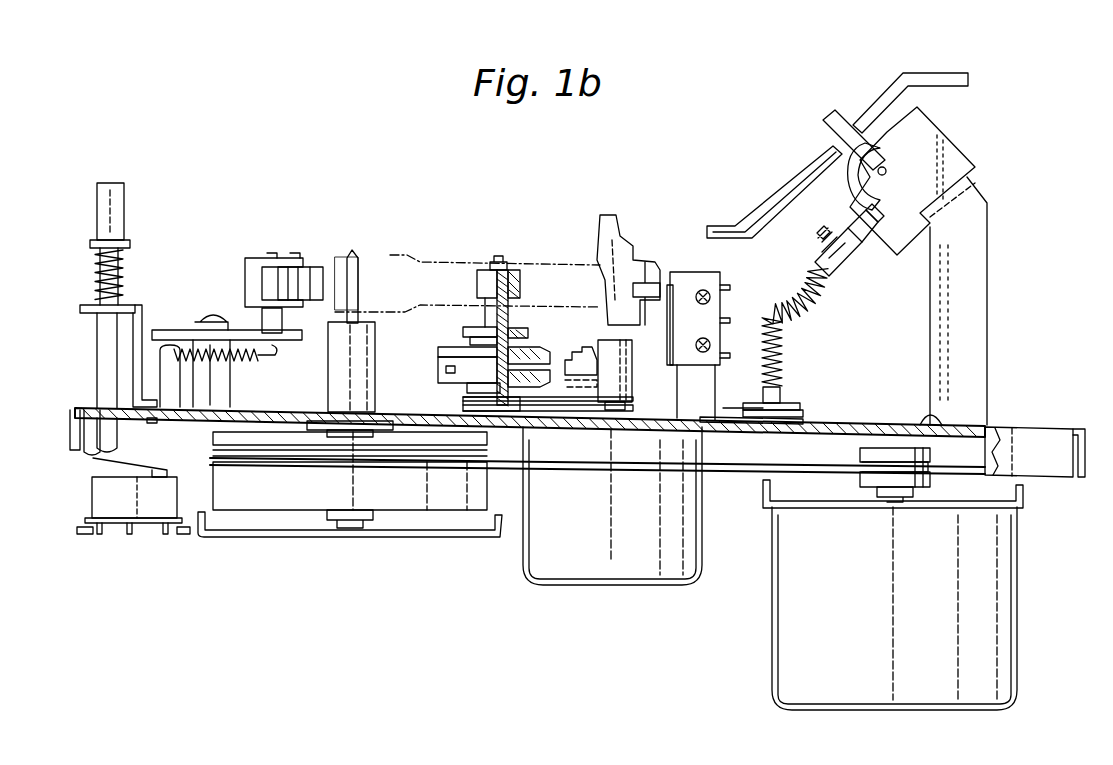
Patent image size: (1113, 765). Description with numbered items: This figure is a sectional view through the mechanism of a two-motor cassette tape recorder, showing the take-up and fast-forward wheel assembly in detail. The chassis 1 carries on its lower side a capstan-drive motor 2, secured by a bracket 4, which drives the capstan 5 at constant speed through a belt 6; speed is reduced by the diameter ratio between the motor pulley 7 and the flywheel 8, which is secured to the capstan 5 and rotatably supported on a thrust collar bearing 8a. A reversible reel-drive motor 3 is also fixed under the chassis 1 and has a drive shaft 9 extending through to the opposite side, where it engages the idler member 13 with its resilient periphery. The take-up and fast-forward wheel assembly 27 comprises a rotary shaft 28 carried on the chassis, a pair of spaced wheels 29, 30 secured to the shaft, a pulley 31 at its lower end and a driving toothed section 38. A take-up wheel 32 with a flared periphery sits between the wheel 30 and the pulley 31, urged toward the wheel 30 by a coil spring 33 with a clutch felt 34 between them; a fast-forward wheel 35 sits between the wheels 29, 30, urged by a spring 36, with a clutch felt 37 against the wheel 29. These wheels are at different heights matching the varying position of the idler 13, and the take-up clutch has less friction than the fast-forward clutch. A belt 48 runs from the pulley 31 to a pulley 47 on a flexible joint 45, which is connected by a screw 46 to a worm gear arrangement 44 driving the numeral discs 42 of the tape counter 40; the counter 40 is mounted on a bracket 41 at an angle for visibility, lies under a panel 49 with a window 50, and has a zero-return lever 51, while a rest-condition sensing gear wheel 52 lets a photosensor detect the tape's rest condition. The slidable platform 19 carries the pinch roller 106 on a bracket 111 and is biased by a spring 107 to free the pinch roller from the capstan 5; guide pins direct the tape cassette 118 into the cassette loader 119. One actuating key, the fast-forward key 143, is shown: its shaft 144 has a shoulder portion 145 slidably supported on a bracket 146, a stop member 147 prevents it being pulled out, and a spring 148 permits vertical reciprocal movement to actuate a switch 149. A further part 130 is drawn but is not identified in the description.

The chassis 1 is at (1036, 432).
The capstan-drive motor 2 is at (1007, 610).
The reel-drive motor 3 is at (697, 572).
The bracket 4 is at (1025, 498).
The capstan 5 is at (358, 292).
The belt 6 is at (743, 472).
The motor pulley 7 is at (860, 455).
The flywheel 8 is at (213, 476).
The thrust collar bearing 8a is at (478, 540).
The drive shaft 9 is at (632, 358).
The idler member 13 is at (578, 352).
The platform 19 is at (162, 334).
The take-up and fast-forward wheel assembly 27 is at (519, 258).
The rotary shaft 28 is at (490, 325).
The wheel 29 is at (470, 335).
The wheel 30 is at (445, 368).
The pulley 31 is at (472, 412).
The take-up wheel 32 is at (560, 400).
The coil spring 33 is at (468, 392).
The clutch felt 34 is at (540, 412).
The fast-forward wheel 35 is at (545, 350).
The spring 36 is at (445, 348).
The clutch felt 37 is at (522, 342).
The driving toothed section 38 is at (477, 278).
The tape counter 40 is at (955, 155).
The bracket 41 is at (988, 262).
The numeral discs 42 is at (858, 197).
The worm gear arrangement 44 is at (876, 240).
The flexible joint 45 is at (788, 320).
The screw 46 is at (837, 272).
The pulley 47 is at (790, 405).
The belt 48 is at (722, 408).
The panel 49 is at (817, 160).
The window 50 is at (860, 120).
The zero-return lever 51 is at (828, 118).
The rest-condition sensing gear wheel 52 is at (806, 412).
The pinch roller 106 is at (312, 268).
The spring 107 is at (252, 360).
The bracket 111 is at (248, 266).
The tape cassette 118 is at (388, 253).
The cassette loader 119 is at (612, 224).
The switch box 130 is at (708, 280).
The fast-forward key 143 is at (106, 184).
The shaft 144 is at (103, 278).
The shoulder portion 145 is at (85, 407).
The bracket 146 is at (145, 297).
The stop member 147 is at (97, 318).
The spring 148 is at (126, 256).
The switch 149 is at (92, 495).